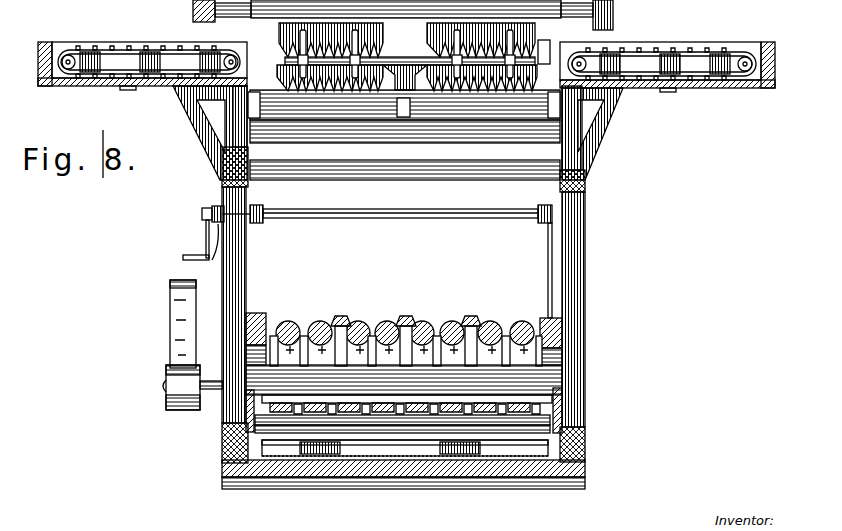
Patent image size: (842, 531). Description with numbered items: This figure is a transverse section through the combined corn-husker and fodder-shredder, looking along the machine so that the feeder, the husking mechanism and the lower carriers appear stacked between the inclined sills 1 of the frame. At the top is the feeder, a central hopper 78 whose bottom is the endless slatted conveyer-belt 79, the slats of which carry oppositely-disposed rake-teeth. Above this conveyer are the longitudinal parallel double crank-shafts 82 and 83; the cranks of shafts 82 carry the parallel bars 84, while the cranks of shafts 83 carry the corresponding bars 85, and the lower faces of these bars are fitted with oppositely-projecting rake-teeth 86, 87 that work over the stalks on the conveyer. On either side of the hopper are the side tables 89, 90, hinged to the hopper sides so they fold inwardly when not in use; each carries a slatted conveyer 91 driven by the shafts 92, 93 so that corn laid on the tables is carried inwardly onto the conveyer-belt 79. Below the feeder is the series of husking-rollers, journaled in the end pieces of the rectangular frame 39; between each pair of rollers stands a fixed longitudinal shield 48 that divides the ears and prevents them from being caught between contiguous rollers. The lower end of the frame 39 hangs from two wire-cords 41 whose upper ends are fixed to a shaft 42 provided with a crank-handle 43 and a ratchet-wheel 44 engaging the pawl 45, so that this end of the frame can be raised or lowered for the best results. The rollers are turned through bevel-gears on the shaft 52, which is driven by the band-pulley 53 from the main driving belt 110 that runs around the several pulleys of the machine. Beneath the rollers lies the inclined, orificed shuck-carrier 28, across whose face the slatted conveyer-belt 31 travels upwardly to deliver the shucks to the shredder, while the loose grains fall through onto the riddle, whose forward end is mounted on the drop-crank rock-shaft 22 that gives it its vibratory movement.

The inclined sills 1 is at (575, 443).
The drop-crank rock-shaft 22 is at (562, 430).
The shuck-carrier 28 is at (556, 409).
The slatted conveyer-belt 31 is at (325, 440).
The rectangular frame 39 is at (560, 323).
The wire-cords 41 is at (548, 274).
The shaft 42 is at (407, 218).
The crank-handle 43 is at (206, 238).
The ratchet-wheel 44 is at (209, 252).
The pawl 45 is at (214, 204).
The longitudinal shield 48 is at (342, 316).
The shaft 52 is at (212, 394).
The band-pulley 53 is at (176, 390).
The central hopper 78 is at (556, 50).
The conveyer-belt 79 is at (323, 114).
The double crank-shafts 82 is at (455, 40).
The double crank-shafts 83 is at (354, 40).
The parallel bars 84 is at (508, 42).
The bars 85 is at (285, 32).
The rake-teeth 86 is at (530, 52).
The rake-teeth 87 is at (283, 50).
The side table 89 is at (667, 75).
The side table 90 is at (95, 86).
The slatted conveyer 91 is at (127, 48).
The shaft 92 is at (590, 56).
The shaft 93 is at (57, 51).
The belt 110 is at (186, 323).